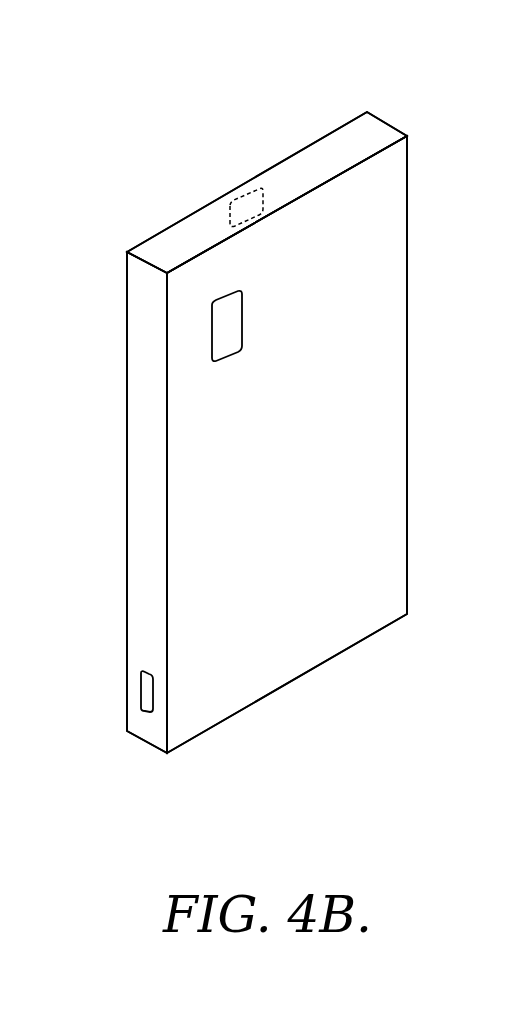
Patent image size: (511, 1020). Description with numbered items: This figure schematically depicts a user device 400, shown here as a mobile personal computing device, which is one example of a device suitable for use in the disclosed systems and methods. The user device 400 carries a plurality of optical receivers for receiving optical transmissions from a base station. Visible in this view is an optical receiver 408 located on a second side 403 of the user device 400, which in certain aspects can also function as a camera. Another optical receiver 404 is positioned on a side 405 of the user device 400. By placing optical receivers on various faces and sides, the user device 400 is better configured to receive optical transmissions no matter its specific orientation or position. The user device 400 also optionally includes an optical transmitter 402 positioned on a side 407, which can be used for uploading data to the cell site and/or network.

The user device 400 is at (428, 242).
The optical transmitter 402 is at (243, 195).
The second side 403 is at (365, 627).
The optical receiver 404 is at (141, 690).
The side 405 is at (146, 441).
The side 407 is at (380, 137).
The optical receiver 408 is at (225, 365).